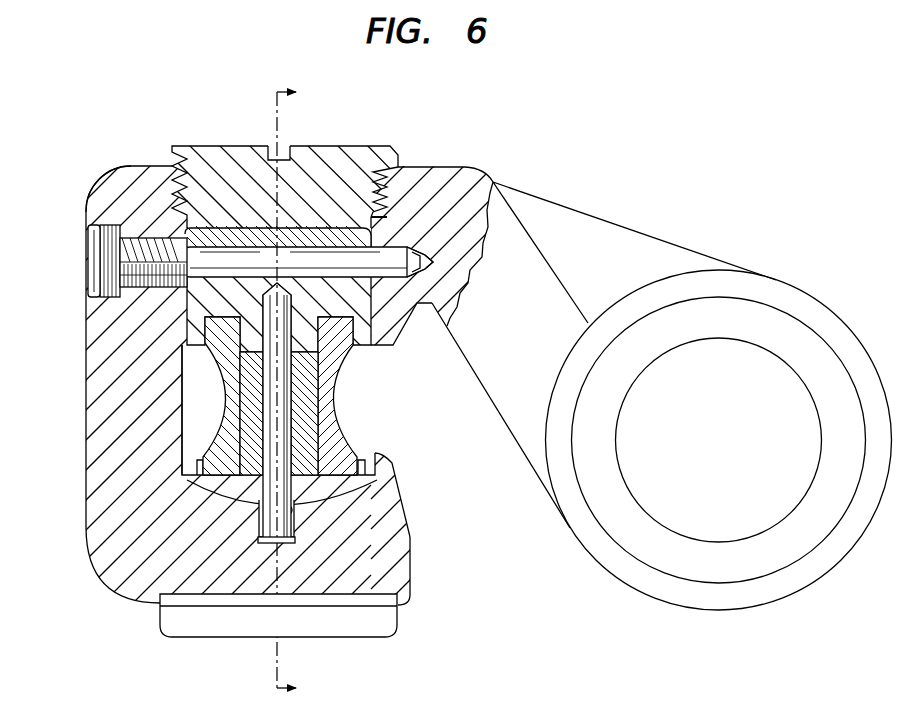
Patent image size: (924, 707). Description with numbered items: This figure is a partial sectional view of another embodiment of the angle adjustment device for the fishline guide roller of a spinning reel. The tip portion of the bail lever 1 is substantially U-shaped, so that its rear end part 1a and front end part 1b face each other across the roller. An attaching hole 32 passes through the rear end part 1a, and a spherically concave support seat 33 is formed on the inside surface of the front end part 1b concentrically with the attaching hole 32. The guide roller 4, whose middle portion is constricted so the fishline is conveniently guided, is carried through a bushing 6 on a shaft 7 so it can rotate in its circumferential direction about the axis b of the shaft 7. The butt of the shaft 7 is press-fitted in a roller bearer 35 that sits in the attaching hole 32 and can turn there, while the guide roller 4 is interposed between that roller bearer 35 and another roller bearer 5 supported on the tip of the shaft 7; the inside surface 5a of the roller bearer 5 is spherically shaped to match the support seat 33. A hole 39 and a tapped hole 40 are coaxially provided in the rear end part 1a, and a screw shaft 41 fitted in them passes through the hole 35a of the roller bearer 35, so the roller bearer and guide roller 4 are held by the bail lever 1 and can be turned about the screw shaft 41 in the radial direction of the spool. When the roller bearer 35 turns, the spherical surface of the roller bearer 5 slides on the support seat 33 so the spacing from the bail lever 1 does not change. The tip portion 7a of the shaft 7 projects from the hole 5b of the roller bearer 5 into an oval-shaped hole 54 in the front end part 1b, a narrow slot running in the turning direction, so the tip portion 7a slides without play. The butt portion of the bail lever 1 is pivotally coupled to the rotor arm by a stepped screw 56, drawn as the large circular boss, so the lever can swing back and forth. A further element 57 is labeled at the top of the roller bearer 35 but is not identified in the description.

The bail lever 1 is at (473, 163).
The rear end part 1a is at (124, 177).
The front end part 1b is at (402, 549).
The guide roller 4 is at (225, 411).
The roller bearer 5 is at (346, 506).
The inside surface 5a is at (405, 532).
The hole 5b is at (295, 530).
The bushing 6 is at (310, 390).
The shaft 7 is at (272, 378).
The tip portion 7a is at (280, 545).
The attaching hole 32 is at (352, 205).
The support seat 33 is at (213, 486).
The roller bearer 35 is at (185, 300).
The hole 35a is at (222, 252).
The hole 39 is at (433, 263).
The tapped hole 40 is at (108, 257).
The screw shaft 41 is at (95, 271).
The oval-shaped hole 54 is at (260, 523).
The stepped screw 56 is at (757, 364).
The plug head slot 57 is at (354, 150).
The axis of the shaft b is at (280, 427).